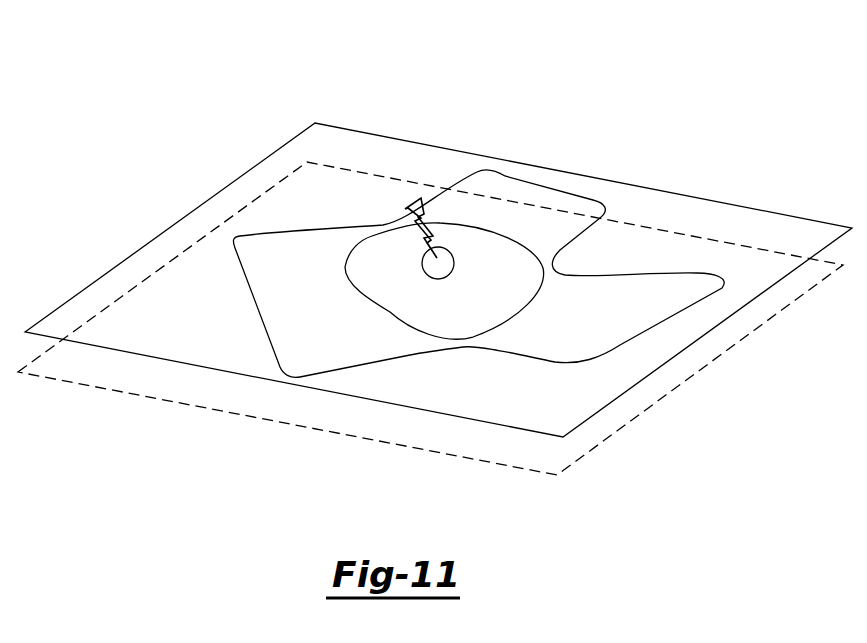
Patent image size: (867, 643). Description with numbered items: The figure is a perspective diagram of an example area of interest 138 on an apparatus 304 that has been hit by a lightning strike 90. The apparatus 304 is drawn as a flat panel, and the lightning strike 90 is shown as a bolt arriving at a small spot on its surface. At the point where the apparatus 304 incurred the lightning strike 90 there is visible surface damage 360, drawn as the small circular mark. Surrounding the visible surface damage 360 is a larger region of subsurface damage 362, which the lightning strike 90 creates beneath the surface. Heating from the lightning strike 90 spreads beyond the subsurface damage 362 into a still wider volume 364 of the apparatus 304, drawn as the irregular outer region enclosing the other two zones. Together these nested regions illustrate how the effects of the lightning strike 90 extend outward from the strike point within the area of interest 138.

The area of interest 138 is at (130, 52).
The apparatus 304 is at (155, 237).
The wider volume 364 is at (410, 355).
The subsurface damage 362 is at (370, 303).
The visible surface damage 360 is at (442, 278).
The lightning strike 90 is at (407, 207).